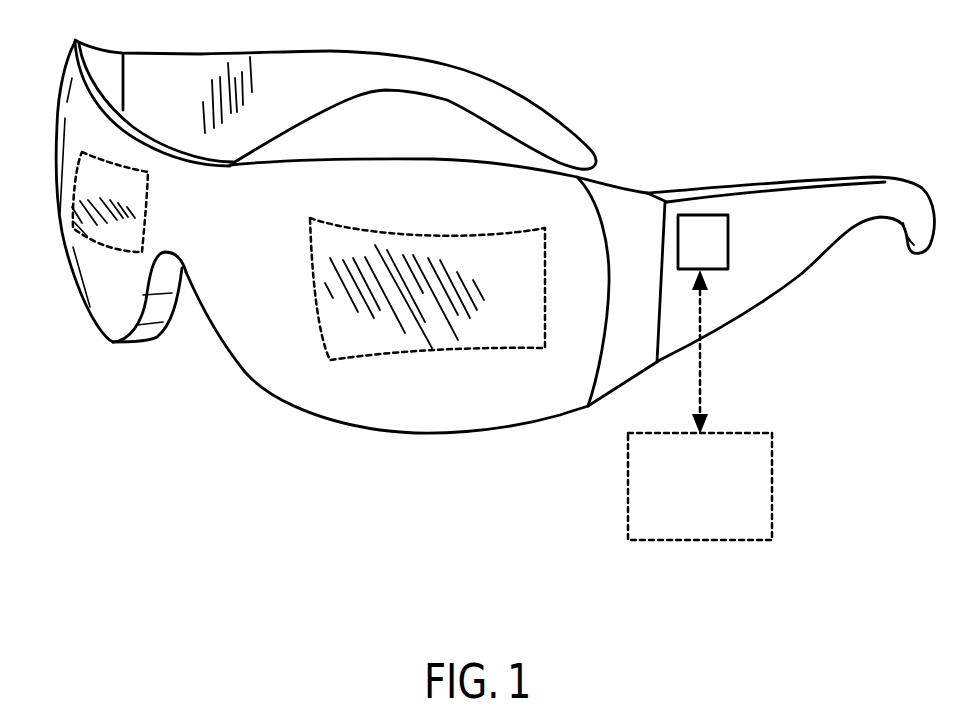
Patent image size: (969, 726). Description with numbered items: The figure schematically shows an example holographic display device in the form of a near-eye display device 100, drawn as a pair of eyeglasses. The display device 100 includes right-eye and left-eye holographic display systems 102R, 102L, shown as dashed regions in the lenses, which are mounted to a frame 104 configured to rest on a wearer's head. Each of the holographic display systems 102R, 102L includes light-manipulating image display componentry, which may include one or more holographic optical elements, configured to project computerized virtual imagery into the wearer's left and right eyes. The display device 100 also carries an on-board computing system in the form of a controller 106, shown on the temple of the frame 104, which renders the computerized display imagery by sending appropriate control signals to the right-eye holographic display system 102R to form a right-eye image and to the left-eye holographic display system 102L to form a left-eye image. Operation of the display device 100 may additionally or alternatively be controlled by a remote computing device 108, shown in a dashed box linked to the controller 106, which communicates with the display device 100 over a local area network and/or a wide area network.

The near-eye display device 100 is at (538, 37).
The right-eye holographic display system 102R is at (96, 261).
The left-eye holographic display system 102L is at (476, 370).
The frame 104 is at (602, 186).
The controller 106 is at (698, 215).
The remote computing device 108 is at (758, 526).